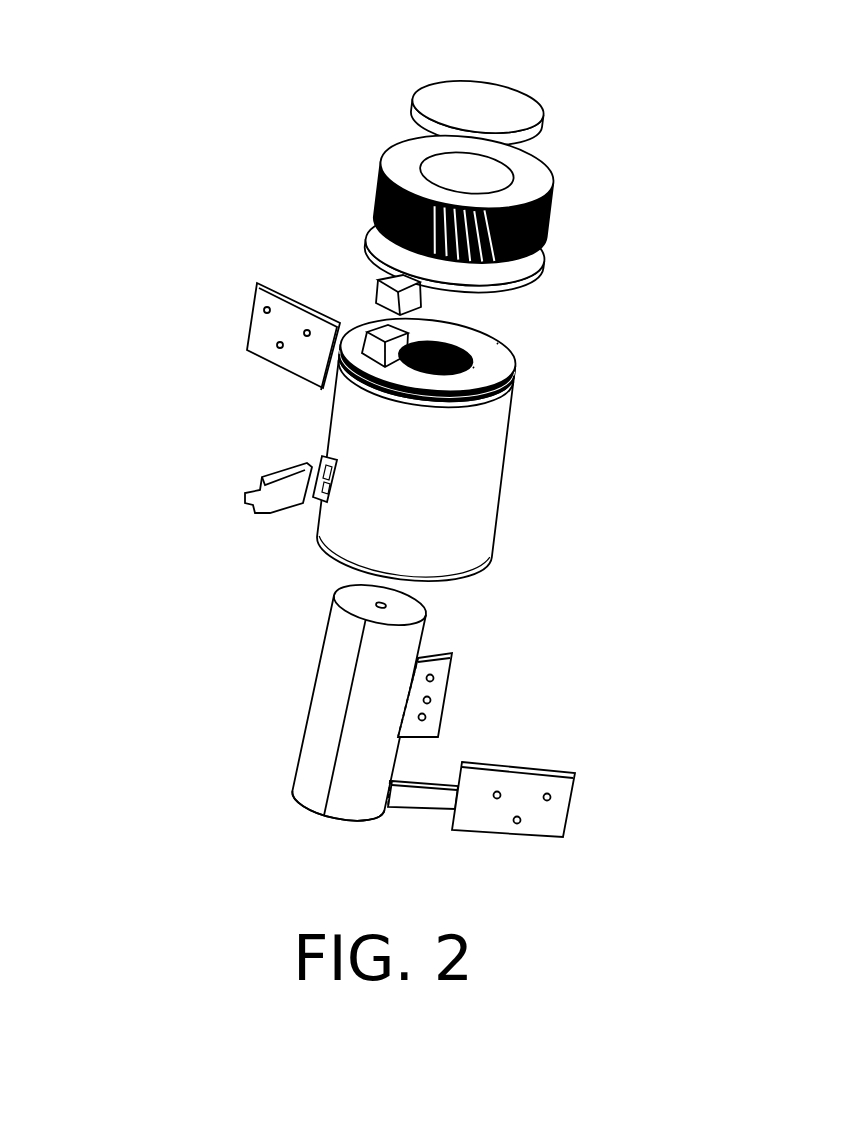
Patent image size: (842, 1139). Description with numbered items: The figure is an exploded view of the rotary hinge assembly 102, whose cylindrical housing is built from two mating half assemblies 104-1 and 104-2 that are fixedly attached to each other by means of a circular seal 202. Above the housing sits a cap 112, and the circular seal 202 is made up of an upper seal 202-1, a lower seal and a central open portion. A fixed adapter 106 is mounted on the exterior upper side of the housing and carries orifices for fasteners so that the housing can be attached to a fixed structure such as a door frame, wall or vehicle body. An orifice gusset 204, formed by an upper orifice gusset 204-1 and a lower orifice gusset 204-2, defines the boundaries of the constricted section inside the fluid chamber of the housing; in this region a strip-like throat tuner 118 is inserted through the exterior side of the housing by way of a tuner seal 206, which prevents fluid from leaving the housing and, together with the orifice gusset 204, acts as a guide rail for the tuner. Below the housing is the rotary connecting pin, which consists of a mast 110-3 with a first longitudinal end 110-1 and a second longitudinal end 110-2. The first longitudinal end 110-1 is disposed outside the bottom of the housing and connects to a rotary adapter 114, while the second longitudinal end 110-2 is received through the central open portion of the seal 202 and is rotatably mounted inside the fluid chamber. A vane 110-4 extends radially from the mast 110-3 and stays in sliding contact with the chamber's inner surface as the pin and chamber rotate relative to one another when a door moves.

The rotary hinge assembly 102 is at (136, 42).
The cap disk 112 is at (503, 92).
The mating half assembly 104-1 is at (547, 212).
The mating half assembly 104-2 is at (500, 480).
The circular seal 202 is at (623, 447).
The upper seal 202-1 is at (532, 273).
The orifice gusset 204 is at (277, 193).
The upper orifice gusset 204-1 is at (380, 279).
The lower orifice gusset 204-2 is at (369, 336).
The fixed adapter 106 is at (273, 363).
The tuner seal 206 is at (323, 460).
The throat tuner 118 is at (270, 513).
The first longitudinal end 110-1 is at (322, 818).
The second longitudinal end 110-2 is at (337, 587).
The mast 110-3 is at (305, 733).
The vane 110-4 is at (452, 660).
The rotary adapter 114 is at (510, 837).